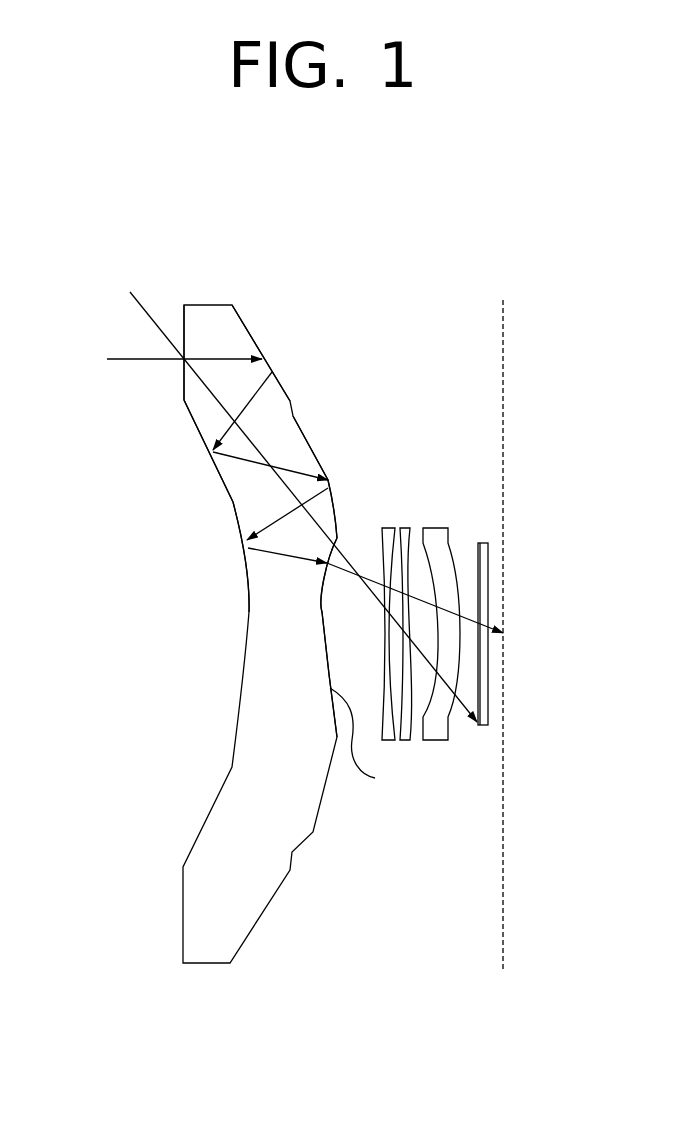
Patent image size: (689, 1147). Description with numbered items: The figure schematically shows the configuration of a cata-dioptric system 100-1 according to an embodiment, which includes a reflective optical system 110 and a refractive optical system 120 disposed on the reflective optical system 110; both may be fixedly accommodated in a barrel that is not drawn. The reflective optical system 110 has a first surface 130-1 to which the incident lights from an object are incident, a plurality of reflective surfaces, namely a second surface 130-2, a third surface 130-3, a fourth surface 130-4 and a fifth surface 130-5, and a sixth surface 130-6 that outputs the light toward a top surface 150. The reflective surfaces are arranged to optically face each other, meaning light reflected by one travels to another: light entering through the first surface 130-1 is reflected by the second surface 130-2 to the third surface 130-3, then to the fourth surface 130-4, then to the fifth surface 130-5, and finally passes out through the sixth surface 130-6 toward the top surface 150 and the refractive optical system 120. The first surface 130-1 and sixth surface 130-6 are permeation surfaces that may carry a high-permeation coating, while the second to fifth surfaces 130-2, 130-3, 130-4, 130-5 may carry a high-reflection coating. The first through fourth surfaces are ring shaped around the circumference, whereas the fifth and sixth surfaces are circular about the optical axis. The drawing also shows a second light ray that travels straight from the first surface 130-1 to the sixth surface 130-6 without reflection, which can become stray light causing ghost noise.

The cata-dioptric system 100-1 is at (334, 202).
The reflective optical system 110 is at (248, 326).
The refractive optical system 120 is at (460, 518).
The first surface 130-1 is at (183, 378).
The second surface 130-2 is at (275, 365).
The third surface 130-3 is at (208, 445).
The fourth surface 130-4 is at (322, 447).
The fifth surface 130-5 is at (238, 543).
The sixth surface 130-6 is at (318, 633).
The top surface 150 is at (504, 597).